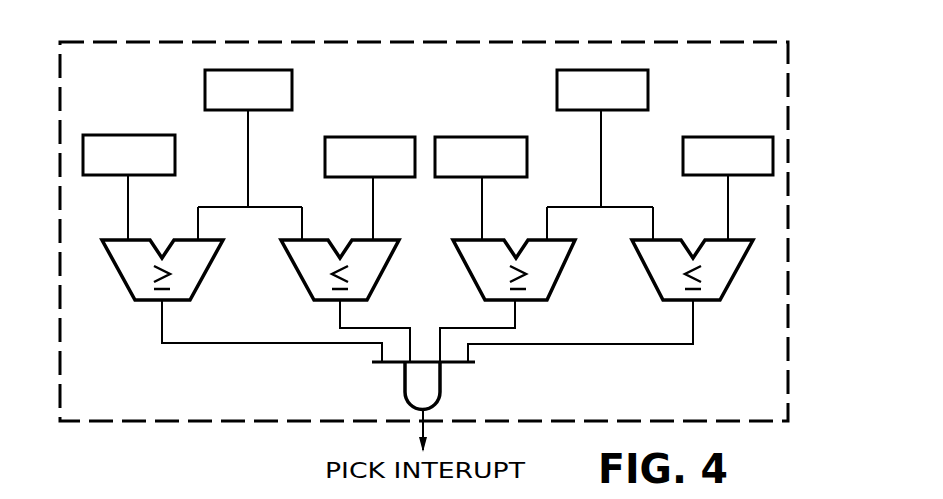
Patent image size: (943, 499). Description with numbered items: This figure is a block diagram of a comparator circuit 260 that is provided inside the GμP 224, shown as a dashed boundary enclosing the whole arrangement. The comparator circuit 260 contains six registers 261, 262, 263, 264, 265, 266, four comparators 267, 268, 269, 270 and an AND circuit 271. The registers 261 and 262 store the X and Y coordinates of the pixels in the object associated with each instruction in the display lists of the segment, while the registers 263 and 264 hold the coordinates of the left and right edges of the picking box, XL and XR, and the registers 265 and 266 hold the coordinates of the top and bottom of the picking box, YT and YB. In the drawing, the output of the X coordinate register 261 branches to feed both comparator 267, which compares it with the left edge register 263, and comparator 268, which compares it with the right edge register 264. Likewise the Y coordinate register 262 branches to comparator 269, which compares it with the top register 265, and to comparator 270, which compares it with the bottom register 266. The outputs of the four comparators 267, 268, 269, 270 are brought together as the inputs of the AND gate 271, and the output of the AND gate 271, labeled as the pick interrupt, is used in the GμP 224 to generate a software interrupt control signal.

The GμP 224 is at (478, 31).
The comparator circuit 260 is at (259, 366).
The register 261 is at (292, 92).
The register 262 is at (648, 88).
The register 263 is at (120, 135).
The register 264 is at (360, 137).
The register 265 is at (475, 137).
The register 266 is at (722, 137).
The comparator 267 is at (203, 280).
The comparator 268 is at (380, 278).
The comparator 269 is at (555, 278).
The comparator 270 is at (710, 302).
The AND circuit 271 is at (440, 388).